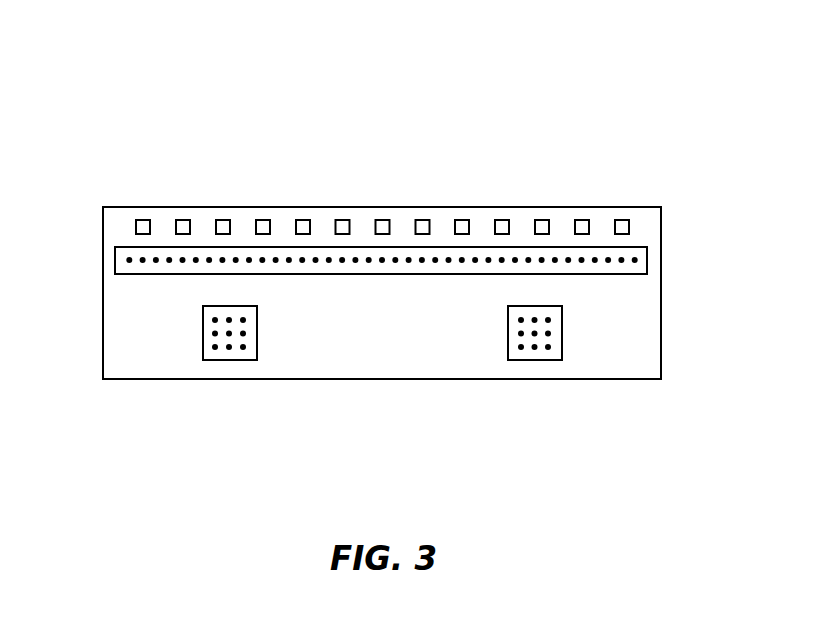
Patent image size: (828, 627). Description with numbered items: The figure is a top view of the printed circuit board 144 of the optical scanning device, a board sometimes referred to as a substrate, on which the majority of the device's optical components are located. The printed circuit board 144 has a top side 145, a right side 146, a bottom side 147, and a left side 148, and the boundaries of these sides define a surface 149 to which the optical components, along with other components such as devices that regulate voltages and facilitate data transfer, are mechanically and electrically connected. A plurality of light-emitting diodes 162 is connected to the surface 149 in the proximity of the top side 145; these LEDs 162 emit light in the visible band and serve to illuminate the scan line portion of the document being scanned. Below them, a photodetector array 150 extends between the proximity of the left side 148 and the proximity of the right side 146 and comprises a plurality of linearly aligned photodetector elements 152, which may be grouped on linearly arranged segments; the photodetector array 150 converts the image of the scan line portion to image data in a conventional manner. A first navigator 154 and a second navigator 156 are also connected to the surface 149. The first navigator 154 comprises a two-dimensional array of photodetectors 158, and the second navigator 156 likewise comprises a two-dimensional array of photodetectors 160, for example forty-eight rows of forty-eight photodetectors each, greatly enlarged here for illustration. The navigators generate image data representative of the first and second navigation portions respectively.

The printed circuit board 144 is at (490, 178).
The top side 145 is at (382, 207).
The right side 146 is at (663, 291).
The bottom side 147 is at (385, 380).
The left side 148 is at (103, 290).
The surface 149 is at (402, 343).
The photodetector array 150 is at (647, 259).
The photodetector elements 152 is at (621, 262).
The first navigator 154 is at (228, 361).
The second navigator 156 is at (536, 361).
The photodetectors 158 is at (215, 334).
The photodetectors 160 is at (548, 334).
The light-emitting diodes 162 is at (262, 207).